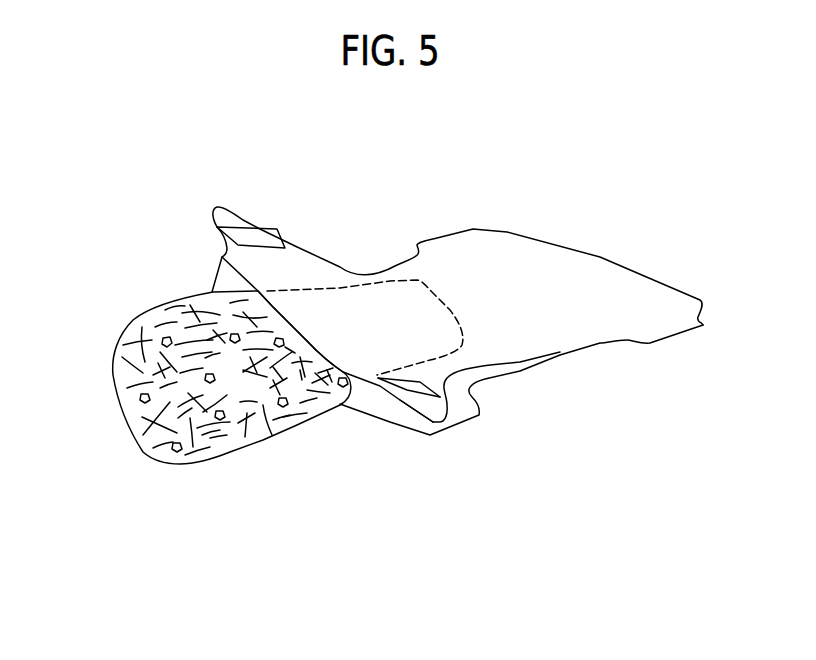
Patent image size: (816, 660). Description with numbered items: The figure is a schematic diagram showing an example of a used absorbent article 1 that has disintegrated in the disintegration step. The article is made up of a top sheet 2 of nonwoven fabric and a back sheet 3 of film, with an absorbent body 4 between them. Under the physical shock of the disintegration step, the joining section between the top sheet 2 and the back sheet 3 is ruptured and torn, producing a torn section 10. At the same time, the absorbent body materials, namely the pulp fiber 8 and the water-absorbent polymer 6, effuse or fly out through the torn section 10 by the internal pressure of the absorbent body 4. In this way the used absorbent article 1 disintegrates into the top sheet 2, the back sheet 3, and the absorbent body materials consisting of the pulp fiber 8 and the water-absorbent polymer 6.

The used absorbent article 1 is at (181, 196).
The top sheet 2 is at (502, 252).
The back sheet 3 is at (480, 380).
The absorbent body 4 is at (243, 562).
The water-absorbent polymer 6 is at (176, 455).
The pulp fiber 8 is at (224, 452).
The torn section 10 is at (390, 416).